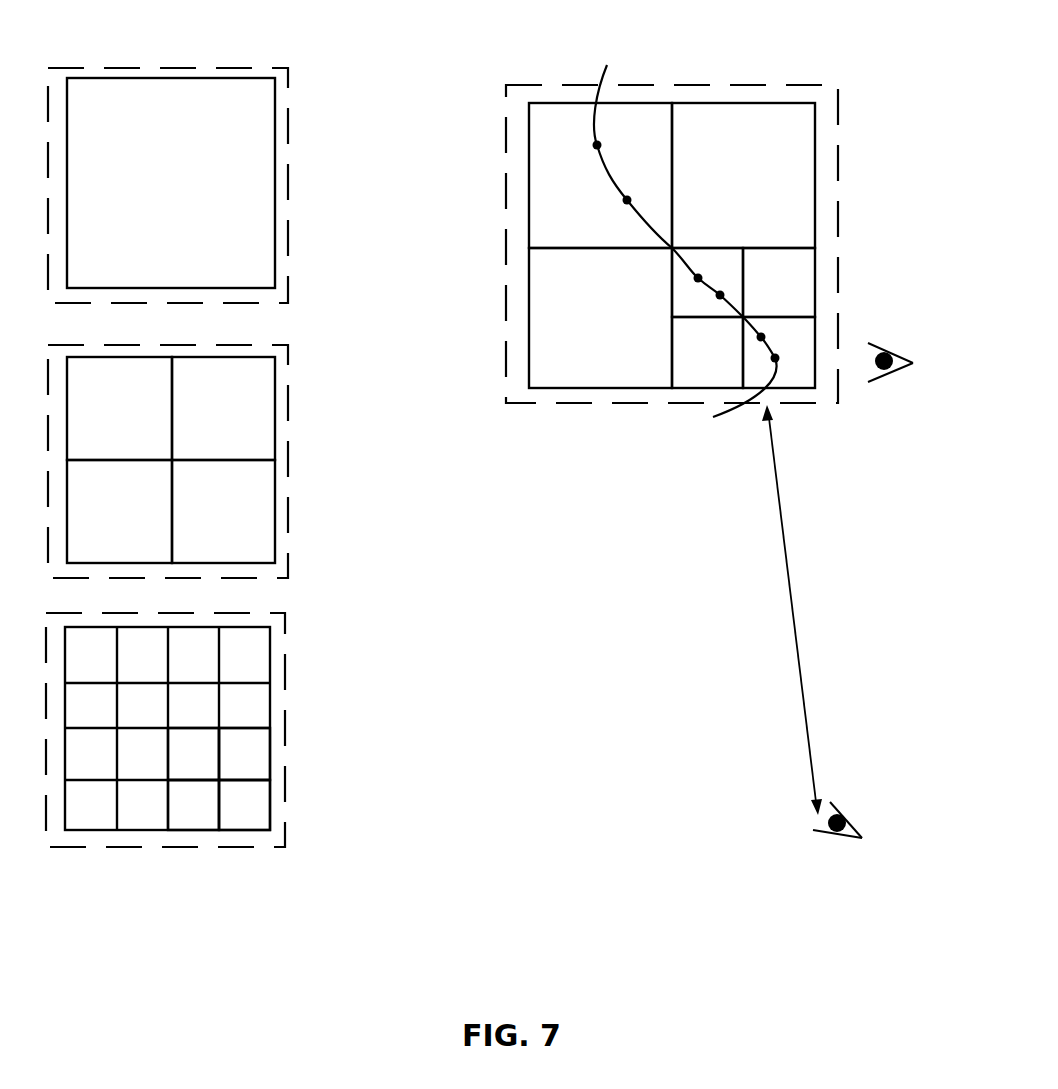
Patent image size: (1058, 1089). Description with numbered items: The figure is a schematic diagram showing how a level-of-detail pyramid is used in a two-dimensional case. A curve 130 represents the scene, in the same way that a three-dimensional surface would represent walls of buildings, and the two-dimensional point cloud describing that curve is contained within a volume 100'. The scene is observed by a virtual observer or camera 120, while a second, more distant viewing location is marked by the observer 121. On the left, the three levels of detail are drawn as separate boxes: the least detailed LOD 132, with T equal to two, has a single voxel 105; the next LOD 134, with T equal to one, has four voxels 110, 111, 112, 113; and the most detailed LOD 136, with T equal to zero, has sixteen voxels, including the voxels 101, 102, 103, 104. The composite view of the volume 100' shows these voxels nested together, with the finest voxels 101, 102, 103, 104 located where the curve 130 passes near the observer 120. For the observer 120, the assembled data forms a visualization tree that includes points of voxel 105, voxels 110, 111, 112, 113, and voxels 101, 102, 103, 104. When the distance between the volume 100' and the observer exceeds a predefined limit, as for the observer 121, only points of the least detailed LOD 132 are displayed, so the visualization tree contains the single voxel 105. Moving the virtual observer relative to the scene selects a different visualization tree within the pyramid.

The volume 100' is at (714, 244).
The voxel 101 is at (206, 771).
The voxel 102 is at (258, 767).
The voxel 103 is at (206, 816).
The voxel 104 is at (260, 816).
The voxel 105 is at (129, 140).
The voxel 110 is at (130, 416).
The voxel 111 is at (133, 524).
The voxel 112 is at (241, 416).
The voxel 113 is at (230, 524).
The virtual observer 120 is at (885, 373).
The observer 121 is at (833, 837).
The curve 130 is at (605, 70).
The least detailed LOD 132 is at (287, 108).
The next LOD 134 is at (287, 384).
The most detailed LOD 136 is at (283, 647).